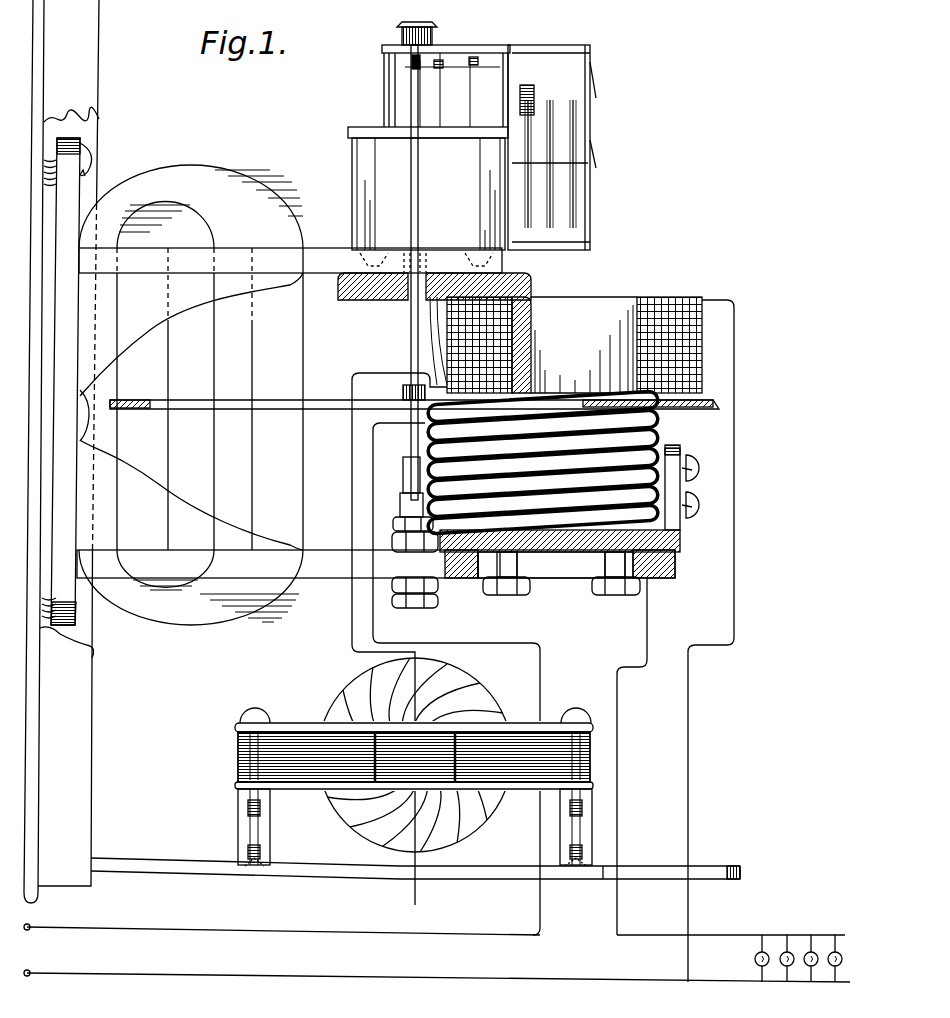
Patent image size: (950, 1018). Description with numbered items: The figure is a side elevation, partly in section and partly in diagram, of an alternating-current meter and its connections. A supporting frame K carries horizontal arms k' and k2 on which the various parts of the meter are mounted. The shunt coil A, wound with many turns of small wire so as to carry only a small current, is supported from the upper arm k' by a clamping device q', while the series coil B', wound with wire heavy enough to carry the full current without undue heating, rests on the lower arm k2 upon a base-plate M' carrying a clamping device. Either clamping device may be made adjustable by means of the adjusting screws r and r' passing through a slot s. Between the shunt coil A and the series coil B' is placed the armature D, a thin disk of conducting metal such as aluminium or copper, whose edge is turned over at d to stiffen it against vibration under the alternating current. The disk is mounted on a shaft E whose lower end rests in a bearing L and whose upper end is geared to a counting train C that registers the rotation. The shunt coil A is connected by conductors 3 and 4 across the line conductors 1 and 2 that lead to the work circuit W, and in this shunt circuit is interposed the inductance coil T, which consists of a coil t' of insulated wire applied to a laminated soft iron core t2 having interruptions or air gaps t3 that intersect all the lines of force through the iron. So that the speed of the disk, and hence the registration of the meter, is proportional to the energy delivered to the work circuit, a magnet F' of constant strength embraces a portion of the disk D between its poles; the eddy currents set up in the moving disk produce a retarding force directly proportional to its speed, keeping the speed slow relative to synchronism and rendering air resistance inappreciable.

The supporting frame K is at (61, 451).
The magnet F' is at (191, 383).
The horizontal arm k' is at (290, 261).
The horizontal arm k2 is at (376, 564).
The turned-over edge d is at (408, 414).
The armature D is at (340, 402).
The shaft E is at (411, 342).
The counting train C is at (506, 50).
The clamping device q' is at (450, 282).
The shunt coil A is at (660, 300).
The conductor 4 is at (684, 641).
The series coil B' is at (559, 462).
The base-plate M' is at (579, 543).
The bearing L is at (403, 478).
The conductor 3 is at (437, 679).
The slot s is at (560, 572).
The adjusting screw r is at (506, 585).
The adjusting screw r' is at (627, 583).
The coil of insulated wire t' is at (415, 755).
The inductance coil T is at (414, 778).
The air gap t3 is at (375, 740).
The laminated soft iron core t2 is at (302, 772).
The conductor 1 is at (204, 934).
The conductor 2 is at (204, 980).
The work circuit W is at (794, 935).